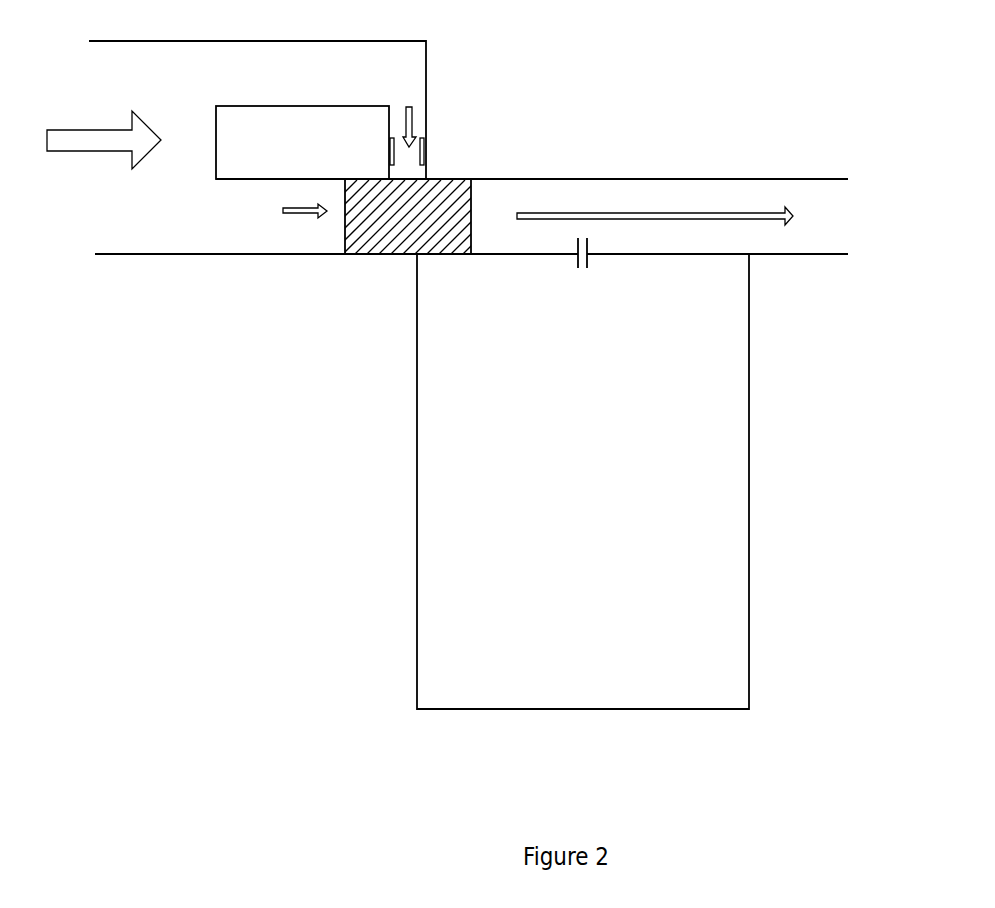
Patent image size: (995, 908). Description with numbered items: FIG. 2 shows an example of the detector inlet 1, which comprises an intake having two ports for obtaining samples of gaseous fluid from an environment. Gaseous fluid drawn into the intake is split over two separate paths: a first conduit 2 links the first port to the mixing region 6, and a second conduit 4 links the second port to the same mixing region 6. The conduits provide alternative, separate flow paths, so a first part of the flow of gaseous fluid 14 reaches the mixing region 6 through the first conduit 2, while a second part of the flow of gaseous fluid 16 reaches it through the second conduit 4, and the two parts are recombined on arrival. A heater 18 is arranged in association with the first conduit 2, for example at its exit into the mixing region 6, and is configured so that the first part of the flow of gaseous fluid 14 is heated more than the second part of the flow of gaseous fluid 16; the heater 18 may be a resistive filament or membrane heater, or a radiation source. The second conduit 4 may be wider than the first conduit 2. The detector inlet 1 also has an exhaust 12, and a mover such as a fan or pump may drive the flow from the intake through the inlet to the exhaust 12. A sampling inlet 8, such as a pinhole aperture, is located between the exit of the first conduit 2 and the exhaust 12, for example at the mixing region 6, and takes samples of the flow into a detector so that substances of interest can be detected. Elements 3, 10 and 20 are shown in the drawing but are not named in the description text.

The detector inlet 1 is at (628, 174).
The first conduit 2 is at (417, 77).
The inlet 3 is at (132, 212).
The second conduit 4 is at (289, 254).
The mixing region 6 is at (471, 205).
The sampling inlet 8 is at (592, 247).
The reservoir 10 is at (524, 683).
The exhaust 12 is at (823, 223).
The first part of the flow of gaseous fluid 14 is at (405, 138).
The second part of the flow of gaseous fluid 16 is at (300, 214).
The heater 18 is at (396, 153).
The main flow arrow 20 is at (673, 212).